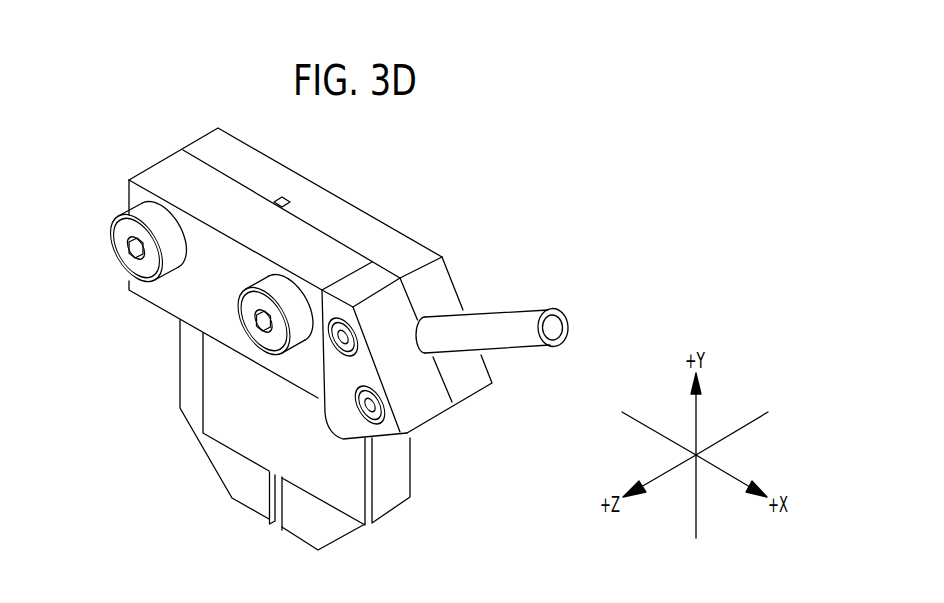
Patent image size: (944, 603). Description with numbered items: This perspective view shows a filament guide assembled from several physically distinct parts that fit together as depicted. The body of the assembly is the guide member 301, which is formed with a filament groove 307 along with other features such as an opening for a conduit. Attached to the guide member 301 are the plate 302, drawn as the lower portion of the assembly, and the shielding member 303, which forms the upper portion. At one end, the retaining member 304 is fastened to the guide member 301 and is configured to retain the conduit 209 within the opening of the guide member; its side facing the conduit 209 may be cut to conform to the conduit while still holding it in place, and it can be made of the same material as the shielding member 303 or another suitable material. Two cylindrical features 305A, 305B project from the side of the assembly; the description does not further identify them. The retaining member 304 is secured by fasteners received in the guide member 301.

The conduit 209 is at (523, 310).
The guide member 301 is at (368, 233).
The plate 302 is at (240, 430).
The shielding member 303 is at (165, 180).
The retaining member 304 is at (422, 413).
The first alignment boss 305A is at (121, 251).
The second alignment boss 305B is at (253, 318).
The filament groove 307 is at (285, 194).